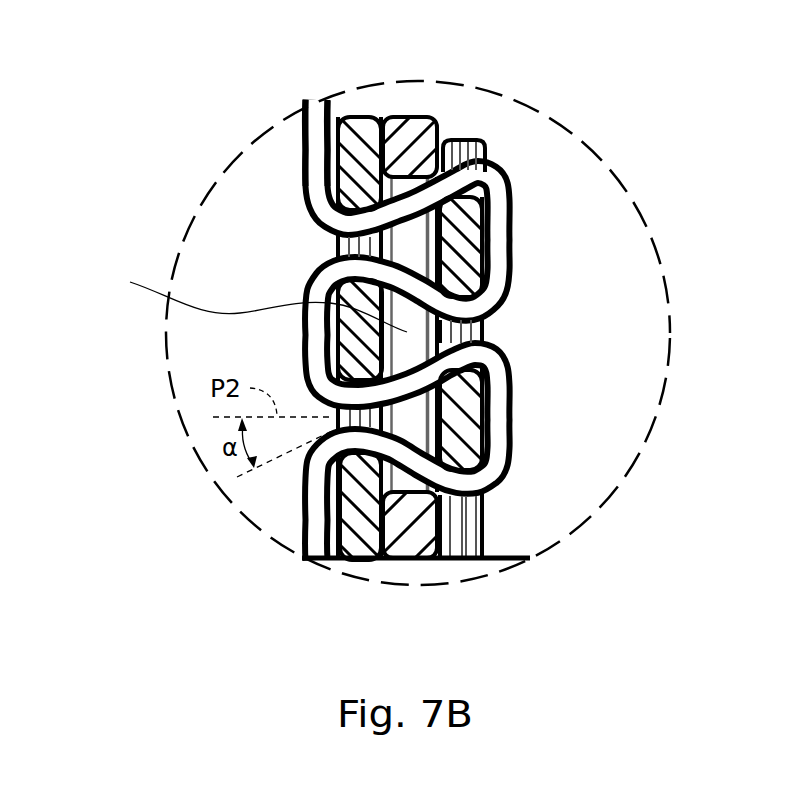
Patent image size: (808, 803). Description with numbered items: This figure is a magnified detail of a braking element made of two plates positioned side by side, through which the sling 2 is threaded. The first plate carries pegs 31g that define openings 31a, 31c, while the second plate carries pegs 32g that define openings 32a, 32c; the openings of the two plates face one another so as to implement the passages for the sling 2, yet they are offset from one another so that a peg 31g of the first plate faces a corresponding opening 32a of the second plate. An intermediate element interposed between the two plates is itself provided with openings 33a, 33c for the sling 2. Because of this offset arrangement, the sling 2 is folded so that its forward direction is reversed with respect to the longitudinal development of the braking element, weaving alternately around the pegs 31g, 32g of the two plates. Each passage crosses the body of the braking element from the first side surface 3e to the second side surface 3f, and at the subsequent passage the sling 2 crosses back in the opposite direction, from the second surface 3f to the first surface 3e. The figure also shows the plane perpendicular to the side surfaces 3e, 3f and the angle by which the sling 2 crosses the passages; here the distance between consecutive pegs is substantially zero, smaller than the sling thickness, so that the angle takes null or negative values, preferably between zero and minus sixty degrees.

The sling 2 is at (500, 408).
The first side surface 3e is at (340, 151).
The second side surface 3f is at (482, 167).
The opening of the first plate 31a is at (345, 248).
The opening of the first plate 31c is at (373, 558).
The peg of the first plate 31g is at (357, 130).
The opening of the second plate 32a is at (484, 338).
The opening of the second plate 32c is at (471, 560).
The peg of the second plate 32g is at (462, 228).
The opening of the intermediate element 33a is at (266, 287).
The opening of the intermediate element 33c is at (403, 560).